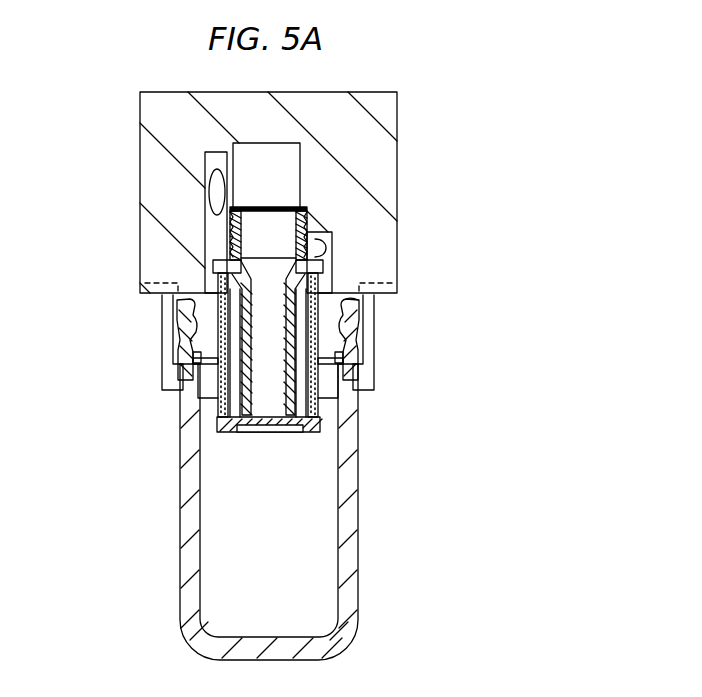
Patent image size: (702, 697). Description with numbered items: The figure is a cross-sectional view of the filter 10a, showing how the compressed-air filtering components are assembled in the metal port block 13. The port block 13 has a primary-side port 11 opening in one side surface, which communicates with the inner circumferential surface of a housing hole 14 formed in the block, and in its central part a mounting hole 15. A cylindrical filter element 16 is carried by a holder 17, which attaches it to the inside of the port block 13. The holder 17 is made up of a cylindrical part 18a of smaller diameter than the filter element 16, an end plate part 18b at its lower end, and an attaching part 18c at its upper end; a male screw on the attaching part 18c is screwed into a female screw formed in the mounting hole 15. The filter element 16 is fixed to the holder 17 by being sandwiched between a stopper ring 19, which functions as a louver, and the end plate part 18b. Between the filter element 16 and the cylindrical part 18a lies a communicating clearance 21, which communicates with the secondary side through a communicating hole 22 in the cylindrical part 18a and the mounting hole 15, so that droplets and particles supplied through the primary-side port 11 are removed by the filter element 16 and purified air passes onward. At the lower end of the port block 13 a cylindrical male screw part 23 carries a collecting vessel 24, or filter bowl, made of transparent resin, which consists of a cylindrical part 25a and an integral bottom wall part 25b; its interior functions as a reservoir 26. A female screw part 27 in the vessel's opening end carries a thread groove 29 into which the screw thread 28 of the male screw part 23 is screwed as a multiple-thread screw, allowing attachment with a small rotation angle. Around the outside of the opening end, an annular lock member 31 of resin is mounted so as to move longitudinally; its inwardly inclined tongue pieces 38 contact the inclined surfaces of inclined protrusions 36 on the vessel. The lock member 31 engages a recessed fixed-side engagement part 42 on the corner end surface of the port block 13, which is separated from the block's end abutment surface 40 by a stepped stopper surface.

The filter 10a is at (445, 170).
The primary-side port 11 is at (213, 195).
The port block 13 is at (345, 118).
The housing hole 14 is at (322, 233).
The mounting hole 15 is at (283, 158).
The filter element 16 is at (223, 388).
The holder 17 is at (320, 425).
The cylindrical part 18a is at (297, 407).
The end plate part 18b is at (267, 420).
The attaching part 18c is at (305, 209).
The stopper ring 19 is at (342, 255).
The communicating clearance 21 is at (220, 407).
The communicating hole 22 is at (220, 287).
The male screw part 23 is at (373, 330).
The collecting vessel 24 is at (360, 503).
The cylindrical part 25a is at (347, 550).
The bottom wall part 25b is at (250, 640).
The reservoir 26 is at (279, 592).
The female screw part 27 is at (362, 305).
The screw thread 28 is at (365, 313).
The thread groove 29 is at (190, 333).
The annular lock member 31 is at (377, 376).
The inclined protrusion 36 is at (187, 353).
The tongue piece 38 is at (373, 340).
The end abutment surface 40 is at (150, 303).
The fixed-side engagement part 42 is at (370, 287).